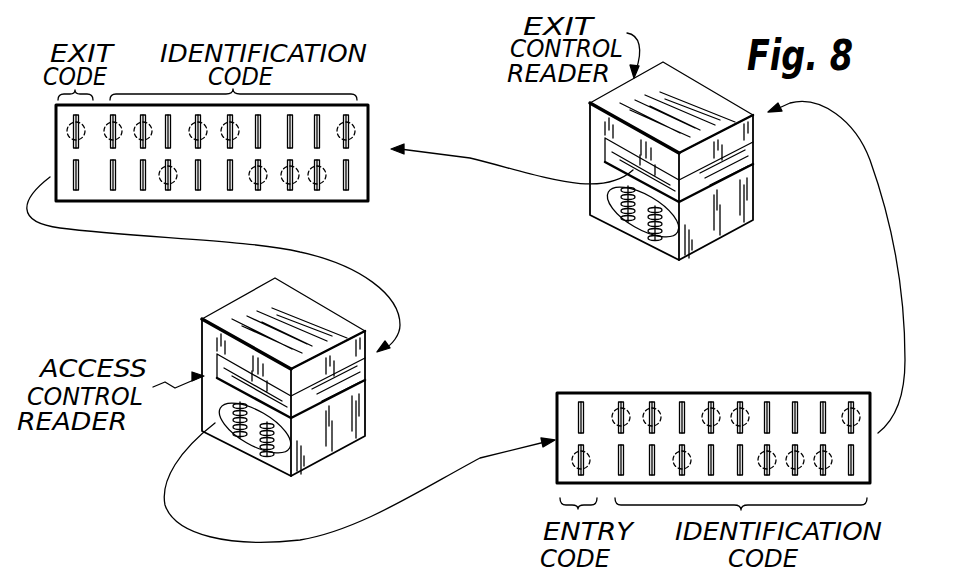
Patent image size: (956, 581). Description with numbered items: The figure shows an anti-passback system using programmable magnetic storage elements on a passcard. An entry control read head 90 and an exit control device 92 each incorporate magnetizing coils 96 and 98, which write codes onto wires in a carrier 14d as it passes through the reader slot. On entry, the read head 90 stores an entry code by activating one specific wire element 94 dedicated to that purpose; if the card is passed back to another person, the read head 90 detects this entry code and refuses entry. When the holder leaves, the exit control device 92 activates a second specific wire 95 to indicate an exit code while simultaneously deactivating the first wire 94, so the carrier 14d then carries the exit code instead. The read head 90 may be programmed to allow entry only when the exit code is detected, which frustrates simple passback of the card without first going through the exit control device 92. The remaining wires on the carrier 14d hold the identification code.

The carrier 14d is at (776, 381).
The entry control read head 90 is at (243, 321).
The exit control device 92 is at (737, 240).
The wire element 94 is at (74, 122).
The second specific wire 95 is at (80, 172).
The magnetizing coil 96 is at (622, 188).
The magnetizing coil 98 is at (653, 234).